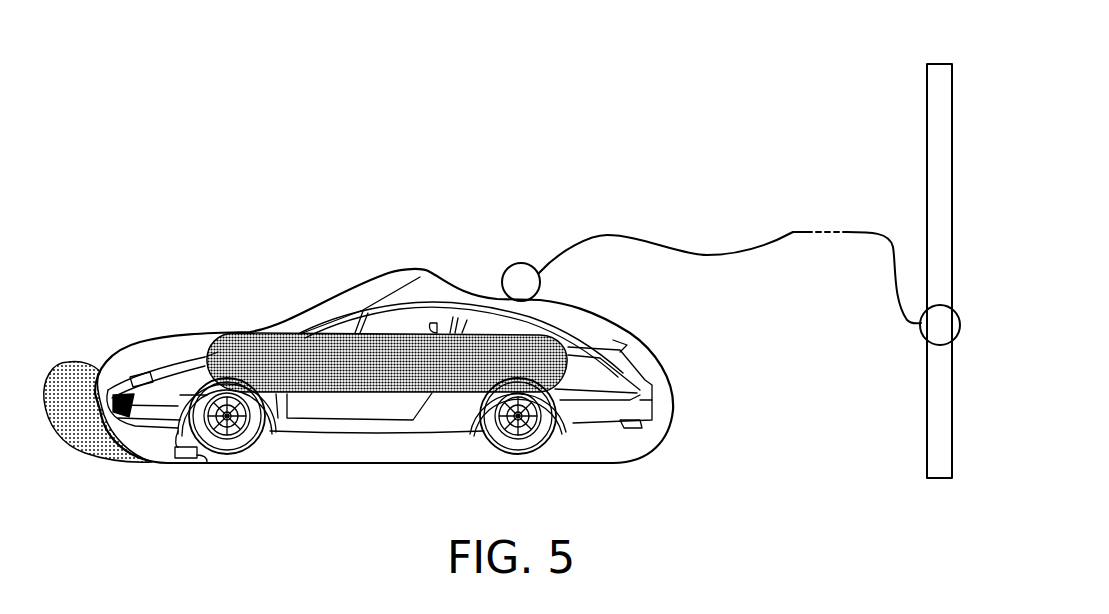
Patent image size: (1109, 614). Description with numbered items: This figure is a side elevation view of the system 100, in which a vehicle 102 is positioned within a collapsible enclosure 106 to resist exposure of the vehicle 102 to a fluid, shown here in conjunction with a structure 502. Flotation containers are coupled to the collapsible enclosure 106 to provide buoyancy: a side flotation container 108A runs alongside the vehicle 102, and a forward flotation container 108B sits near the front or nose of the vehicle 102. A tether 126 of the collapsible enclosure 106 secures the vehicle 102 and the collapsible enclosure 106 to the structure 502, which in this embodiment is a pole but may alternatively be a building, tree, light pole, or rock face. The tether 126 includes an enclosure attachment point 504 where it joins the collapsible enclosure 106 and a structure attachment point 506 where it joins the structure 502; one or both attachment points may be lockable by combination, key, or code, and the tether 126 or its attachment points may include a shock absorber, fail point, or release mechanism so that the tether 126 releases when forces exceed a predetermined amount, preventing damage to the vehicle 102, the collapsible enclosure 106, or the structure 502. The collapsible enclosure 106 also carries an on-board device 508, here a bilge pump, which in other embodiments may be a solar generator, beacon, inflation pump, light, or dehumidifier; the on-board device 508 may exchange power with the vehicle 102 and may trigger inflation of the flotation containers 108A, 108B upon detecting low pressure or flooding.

The system 100 is at (258, 72).
The vehicle 102 is at (345, 432).
The collapsible enclosure 106 is at (148, 338).
The side flotation container 108A is at (273, 333).
The forward flotation container 108B is at (80, 453).
The tether 126 is at (710, 255).
The structure 502 is at (927, 118).
The enclosure attachment point 504 is at (503, 266).
The structure attachment point 506 is at (921, 332).
The on-board device 508 is at (180, 464).